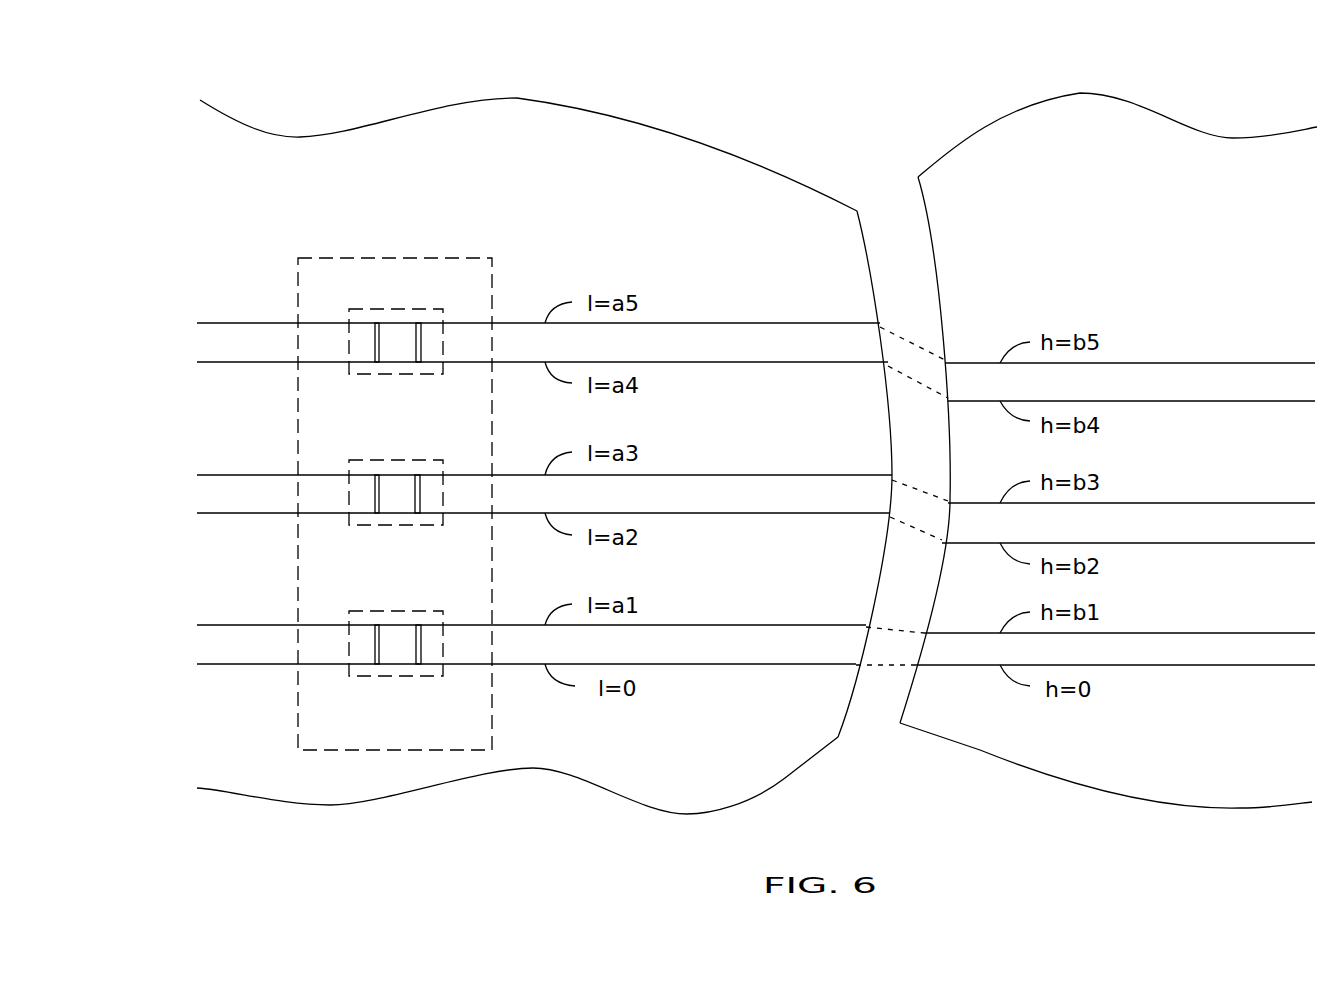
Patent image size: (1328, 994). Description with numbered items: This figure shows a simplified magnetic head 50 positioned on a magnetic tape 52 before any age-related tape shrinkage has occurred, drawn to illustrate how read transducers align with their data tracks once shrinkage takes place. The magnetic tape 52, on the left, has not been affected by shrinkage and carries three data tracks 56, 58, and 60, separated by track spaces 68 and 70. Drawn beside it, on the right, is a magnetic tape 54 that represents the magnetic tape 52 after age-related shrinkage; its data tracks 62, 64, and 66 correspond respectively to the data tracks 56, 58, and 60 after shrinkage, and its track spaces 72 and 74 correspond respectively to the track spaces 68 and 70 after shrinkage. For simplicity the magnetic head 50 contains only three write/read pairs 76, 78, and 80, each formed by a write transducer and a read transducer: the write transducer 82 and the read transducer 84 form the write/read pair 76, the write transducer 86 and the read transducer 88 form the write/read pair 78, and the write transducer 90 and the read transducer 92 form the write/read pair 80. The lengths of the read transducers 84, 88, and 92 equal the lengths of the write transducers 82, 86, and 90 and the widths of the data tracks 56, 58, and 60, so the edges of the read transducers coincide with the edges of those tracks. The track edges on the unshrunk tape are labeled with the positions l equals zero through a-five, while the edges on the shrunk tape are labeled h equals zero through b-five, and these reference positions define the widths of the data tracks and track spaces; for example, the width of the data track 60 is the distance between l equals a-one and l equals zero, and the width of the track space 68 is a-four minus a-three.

The magnetic head 50 is at (492, 258).
The magnetic tape 52 is at (672, 100).
The magnetic tape 54 is at (993, 100).
The data track 56 is at (542, 342).
The data track 58 is at (544, 494).
The data track 60 is at (531, 644).
The data track 62 is at (1130, 382).
The data track 64 is at (1128, 523).
The data track 66 is at (1114, 649).
The track space 68 is at (724, 425).
The track space 70 is at (724, 585).
The track space 72 is at (1173, 466).
The track space 74 is at (1173, 600).
The write/read pair 76 is at (366, 329).
The write/read pair 78 is at (365, 479).
The write/read pair 80 is at (366, 625).
The write transducer 82 is at (421, 345).
The read transducer 84 is at (375, 345).
The write transducer 86 is at (420, 497).
The read transducer 88 is at (375, 497).
The write transducer 90 is at (421, 644).
The read transducer 92 is at (375, 644).